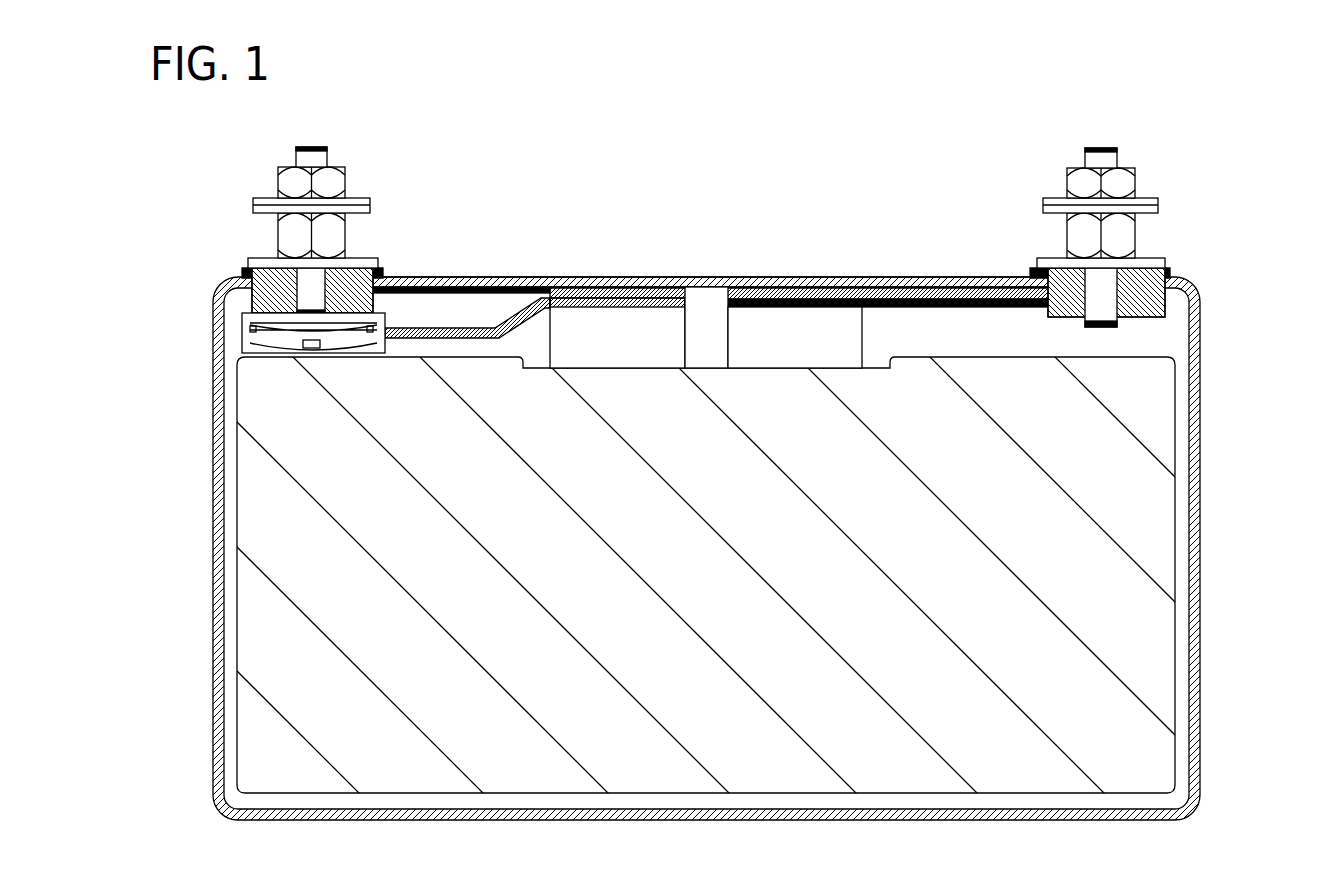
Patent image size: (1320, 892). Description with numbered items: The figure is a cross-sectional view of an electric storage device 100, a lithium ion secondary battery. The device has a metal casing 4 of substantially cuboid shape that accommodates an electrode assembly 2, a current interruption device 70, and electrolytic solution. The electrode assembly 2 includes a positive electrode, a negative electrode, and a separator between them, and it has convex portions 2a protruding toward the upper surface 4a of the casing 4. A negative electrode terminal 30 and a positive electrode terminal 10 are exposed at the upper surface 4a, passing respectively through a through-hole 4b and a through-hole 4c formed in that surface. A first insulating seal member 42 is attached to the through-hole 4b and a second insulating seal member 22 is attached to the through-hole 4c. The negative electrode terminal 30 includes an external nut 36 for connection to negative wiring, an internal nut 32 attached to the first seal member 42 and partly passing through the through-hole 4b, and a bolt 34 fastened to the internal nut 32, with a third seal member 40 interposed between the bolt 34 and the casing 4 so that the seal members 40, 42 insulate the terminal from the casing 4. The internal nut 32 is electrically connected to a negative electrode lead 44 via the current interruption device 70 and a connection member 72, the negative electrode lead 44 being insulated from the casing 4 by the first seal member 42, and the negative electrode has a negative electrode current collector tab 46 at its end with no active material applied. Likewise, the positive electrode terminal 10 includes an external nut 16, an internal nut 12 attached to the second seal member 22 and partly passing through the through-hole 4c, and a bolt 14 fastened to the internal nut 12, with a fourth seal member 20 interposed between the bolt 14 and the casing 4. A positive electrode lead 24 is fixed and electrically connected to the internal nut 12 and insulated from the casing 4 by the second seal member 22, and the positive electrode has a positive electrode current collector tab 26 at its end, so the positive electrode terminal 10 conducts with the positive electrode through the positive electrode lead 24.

The electric storage device 100 is at (992, 98).
The electrode assembly 2 is at (1115, 637).
The convex portions 2a is at (338, 371).
The casing 4 is at (1203, 545).
The upper surface 4a is at (717, 277).
The through-hole 4b is at (338, 268).
The through-hole 4c is at (1073, 270).
The positive electrode terminal 10 is at (1139, 250).
The internal nut 12 is at (1122, 312).
The bolt 14 is at (1123, 238).
The external nut 16 is at (1166, 184).
The fourth seal member 20 is at (1032, 270).
The second insulating seal member 22 is at (883, 300).
The positive electrode lead 24 is at (840, 300).
The positive electrode current collector tab 26 is at (775, 327).
The negative electrode terminal 30 is at (269, 239).
The internal nut 32 is at (265, 323).
The bolt 34 is at (290, 238).
The external nut 36 is at (282, 183).
The third seal member 40 is at (383, 270).
The first insulating seal member 42 is at (430, 289).
The negative electrode lead 44 is at (607, 298).
The negative electrode current collector tab 46 is at (630, 330).
The current interruption device 70 is at (243, 343).
The connection member 72 is at (402, 335).